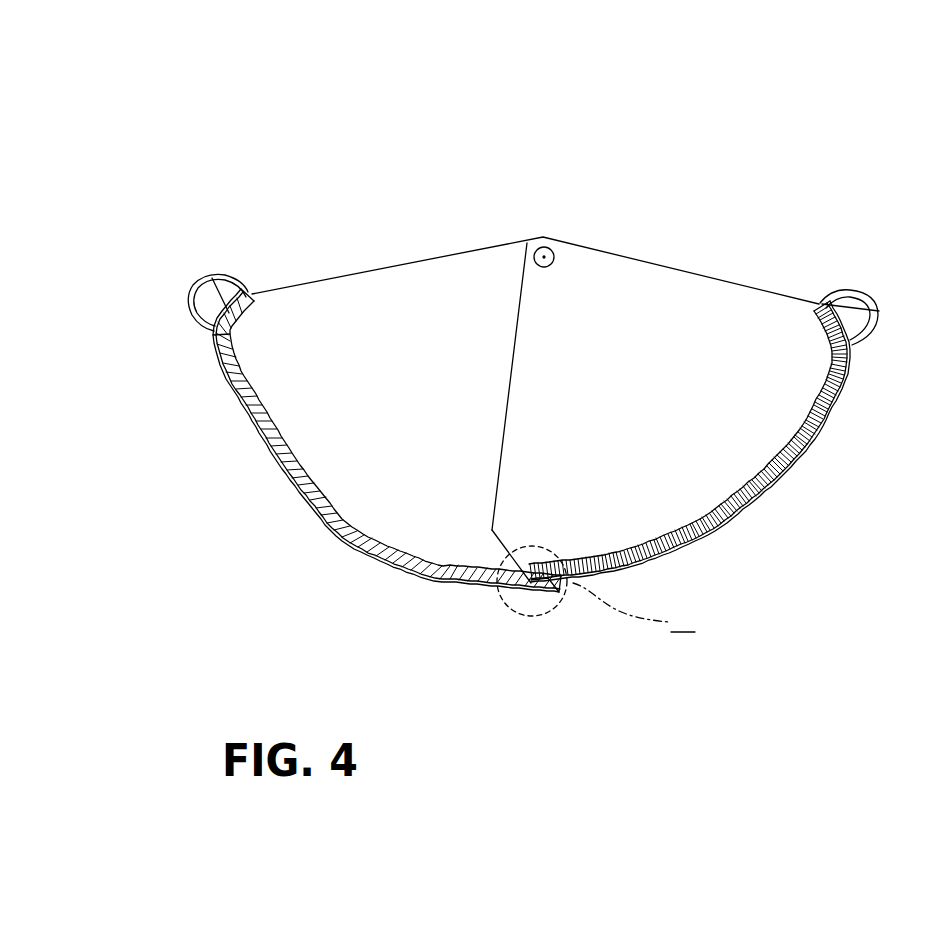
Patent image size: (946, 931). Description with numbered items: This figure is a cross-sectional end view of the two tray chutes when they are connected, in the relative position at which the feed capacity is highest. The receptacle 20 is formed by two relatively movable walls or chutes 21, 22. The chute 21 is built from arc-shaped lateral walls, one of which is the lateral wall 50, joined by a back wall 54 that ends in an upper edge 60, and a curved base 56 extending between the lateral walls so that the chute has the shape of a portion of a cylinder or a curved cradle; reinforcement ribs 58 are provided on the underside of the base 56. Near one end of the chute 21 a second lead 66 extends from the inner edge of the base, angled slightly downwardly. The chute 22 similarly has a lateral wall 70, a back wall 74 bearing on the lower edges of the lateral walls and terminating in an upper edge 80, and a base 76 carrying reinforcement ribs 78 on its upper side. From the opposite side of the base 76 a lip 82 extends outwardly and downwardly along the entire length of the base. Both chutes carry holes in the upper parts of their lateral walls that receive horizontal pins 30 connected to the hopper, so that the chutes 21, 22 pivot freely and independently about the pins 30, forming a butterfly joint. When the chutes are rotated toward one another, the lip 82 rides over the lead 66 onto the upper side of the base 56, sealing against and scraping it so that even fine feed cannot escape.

The receptacle 20 is at (660, 193).
The chute 21 is at (300, 509).
The chute 22 is at (798, 483).
The pin 30 is at (545, 247).
The lateral wall 50 is at (376, 313).
The back wall 54 is at (213, 276).
The base 56 is at (377, 547).
The reinforcement ribs 58 is at (433, 568).
The upper edge 60 is at (248, 298).
The second lead 66 is at (567, 581).
The lateral wall 70 is at (697, 300).
The back wall 74 is at (876, 286).
The base 76 is at (733, 514).
The reinforcement ribs 78 is at (680, 396).
The upper edge 80 is at (818, 302).
The lip 82 is at (540, 581).